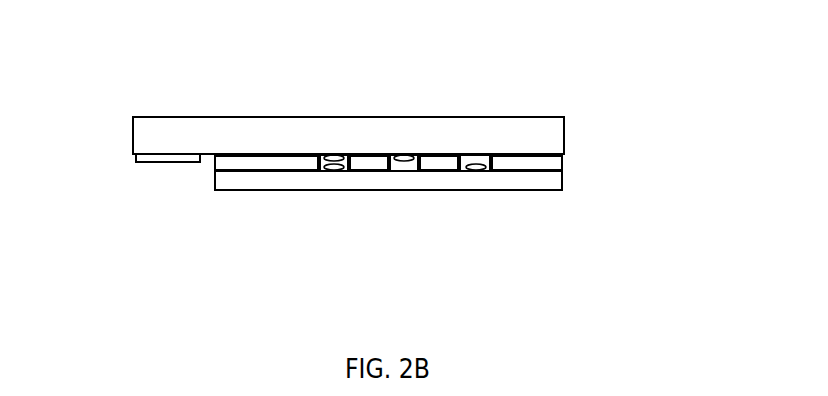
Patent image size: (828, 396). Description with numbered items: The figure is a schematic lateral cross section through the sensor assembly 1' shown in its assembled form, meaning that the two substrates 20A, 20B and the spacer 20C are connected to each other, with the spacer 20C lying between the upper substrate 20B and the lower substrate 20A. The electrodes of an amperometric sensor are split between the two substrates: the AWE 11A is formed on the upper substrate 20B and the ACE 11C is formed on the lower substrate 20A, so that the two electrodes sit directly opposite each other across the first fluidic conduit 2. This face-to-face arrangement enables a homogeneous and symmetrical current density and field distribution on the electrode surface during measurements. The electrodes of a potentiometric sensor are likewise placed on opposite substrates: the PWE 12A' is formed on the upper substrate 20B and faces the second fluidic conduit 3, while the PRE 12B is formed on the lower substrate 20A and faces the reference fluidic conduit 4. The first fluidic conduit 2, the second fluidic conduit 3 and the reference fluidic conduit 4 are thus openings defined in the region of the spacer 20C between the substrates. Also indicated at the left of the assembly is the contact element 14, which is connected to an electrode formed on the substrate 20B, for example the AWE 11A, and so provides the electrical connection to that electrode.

The sensor assembly 1' is at (126, 53).
The contact element 14 is at (148, 161).
The substrate 20A is at (565, 182).
The substrate 20B is at (565, 127).
The spacer 20C is at (214, 171).
The AWE 11A is at (337, 153).
The ACE 11C is at (342, 170).
The PWE 12A' is at (427, 115).
The PRE 12B is at (482, 170).
The first fluidic conduit 2 is at (308, 173).
The second fluidic conduit 3 is at (398, 173).
The reference fluidic conduit 4 is at (456, 173).